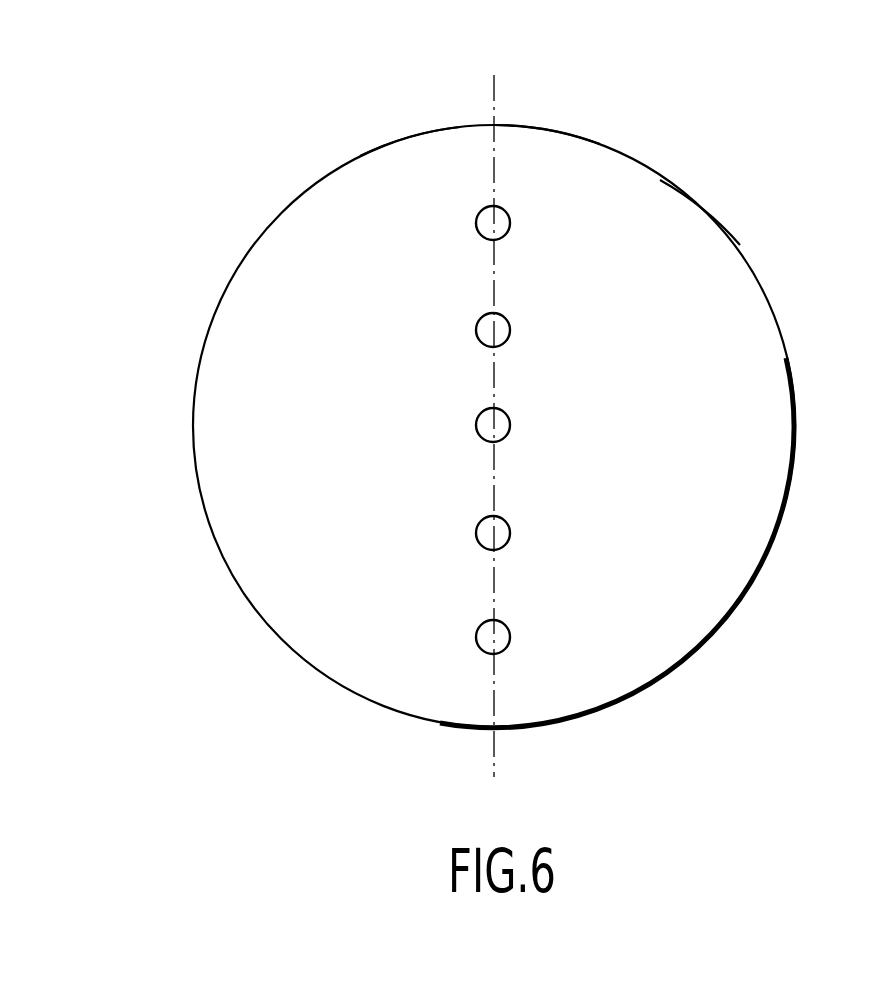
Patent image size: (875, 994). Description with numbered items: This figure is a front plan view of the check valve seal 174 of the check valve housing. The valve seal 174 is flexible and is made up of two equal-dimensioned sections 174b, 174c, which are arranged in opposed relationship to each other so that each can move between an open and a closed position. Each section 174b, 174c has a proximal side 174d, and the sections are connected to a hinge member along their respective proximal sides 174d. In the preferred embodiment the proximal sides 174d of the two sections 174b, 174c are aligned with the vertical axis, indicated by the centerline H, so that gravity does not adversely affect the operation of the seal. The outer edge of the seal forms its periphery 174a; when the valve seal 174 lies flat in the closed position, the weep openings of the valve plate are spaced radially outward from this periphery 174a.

The valve seal 174 is at (283, 676).
The periphery of the flexible valve seal 174a is at (732, 612).
The first equal-dimensioned section 174b is at (695, 235).
The second equal-dimensioned section 174c is at (411, 157).
The proximal side 174d is at (533, 153).
The centerline axis H is at (493, 480).